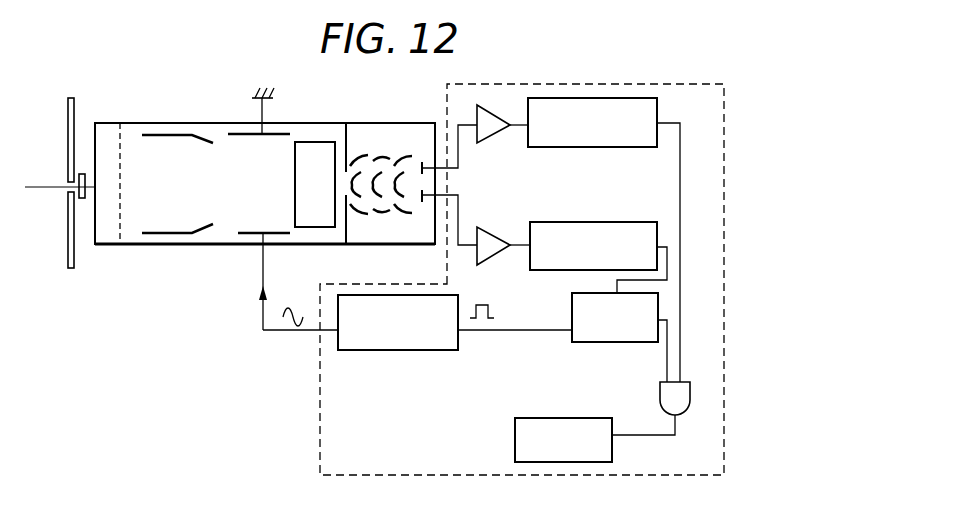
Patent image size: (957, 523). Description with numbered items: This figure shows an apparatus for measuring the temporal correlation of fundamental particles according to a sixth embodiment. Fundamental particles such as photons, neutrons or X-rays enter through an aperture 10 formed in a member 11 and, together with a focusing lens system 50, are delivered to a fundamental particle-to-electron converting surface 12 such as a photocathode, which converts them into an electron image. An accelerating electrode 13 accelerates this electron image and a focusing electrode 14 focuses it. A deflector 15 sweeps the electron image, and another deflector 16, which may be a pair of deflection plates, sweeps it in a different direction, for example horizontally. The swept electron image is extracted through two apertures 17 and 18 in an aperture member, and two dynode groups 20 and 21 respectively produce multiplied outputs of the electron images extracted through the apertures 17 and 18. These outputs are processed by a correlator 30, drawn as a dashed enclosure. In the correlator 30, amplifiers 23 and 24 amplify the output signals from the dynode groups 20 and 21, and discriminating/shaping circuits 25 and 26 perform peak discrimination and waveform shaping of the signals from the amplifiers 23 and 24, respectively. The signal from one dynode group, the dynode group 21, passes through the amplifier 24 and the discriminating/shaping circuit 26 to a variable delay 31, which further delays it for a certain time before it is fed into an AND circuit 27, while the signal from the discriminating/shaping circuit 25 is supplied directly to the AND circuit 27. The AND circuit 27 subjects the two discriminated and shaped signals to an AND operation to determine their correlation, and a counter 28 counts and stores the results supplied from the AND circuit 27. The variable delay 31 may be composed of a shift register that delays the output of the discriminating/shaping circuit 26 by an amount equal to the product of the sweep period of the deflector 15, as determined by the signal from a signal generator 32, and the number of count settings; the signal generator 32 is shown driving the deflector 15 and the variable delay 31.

The aperture 10 is at (58, 182).
The member 11 is at (70, 252).
The focusing lens system 50 is at (82, 172).
The fundamental particle-to-electron converting surface 12 is at (93, 240).
The accelerating electrode 13 is at (123, 240).
The focusing electrode 14 is at (162, 236).
The deflector 15 is at (248, 238).
The deflector 16 is at (311, 222).
The aperture 17 is at (345, 174).
The aperture 18 is at (345, 196).
The dynode group 20 is at (382, 156).
The dynode group 21 is at (405, 211).
The amplifier 23 is at (493, 110).
The amplifier 24 is at (495, 222).
The discriminating/shaping circuit 25 is at (658, 107).
The discriminating/shaping circuit 26 is at (618, 219).
The AND circuit 27 is at (660, 398).
The counter 28 is at (515, 435).
The correlator 30 is at (681, 71).
The variable delay 31 is at (608, 343).
The signal generator 32 is at (400, 351).